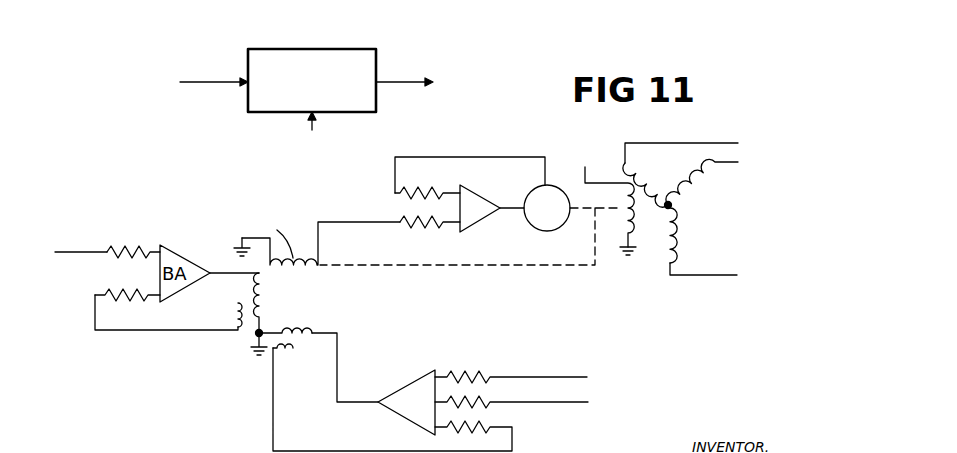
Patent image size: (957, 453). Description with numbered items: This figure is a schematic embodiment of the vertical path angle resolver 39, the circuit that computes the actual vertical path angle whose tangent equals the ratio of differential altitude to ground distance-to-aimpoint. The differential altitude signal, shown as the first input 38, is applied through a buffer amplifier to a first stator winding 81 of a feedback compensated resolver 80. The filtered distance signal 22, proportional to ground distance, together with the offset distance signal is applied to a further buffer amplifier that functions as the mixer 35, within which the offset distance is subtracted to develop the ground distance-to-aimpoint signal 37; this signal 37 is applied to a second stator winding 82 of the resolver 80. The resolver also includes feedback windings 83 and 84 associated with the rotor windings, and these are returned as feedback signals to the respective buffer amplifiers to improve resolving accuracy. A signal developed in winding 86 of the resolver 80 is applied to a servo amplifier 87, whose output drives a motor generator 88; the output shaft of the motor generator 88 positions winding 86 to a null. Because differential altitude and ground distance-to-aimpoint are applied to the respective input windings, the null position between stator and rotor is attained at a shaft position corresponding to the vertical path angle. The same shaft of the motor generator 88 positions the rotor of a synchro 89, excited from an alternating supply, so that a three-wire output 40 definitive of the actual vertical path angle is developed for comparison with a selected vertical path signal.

The vertical path angle resolver 39 is at (347, 49).
The first input 38 is at (205, 82).
The three-wire output 40 is at (394, 83).
The second input 37 is at (313, 127).
The servo amplifier 87 is at (478, 190).
The motor generator 88 is at (545, 232).
The synchro 89 is at (662, 268).
The winding 86 is at (293, 270).
The first stator winding 81 is at (252, 288).
The feedback winding 83 is at (233, 308).
The feedback compensated resolver 80 is at (350, 302).
The second stator winding 82 is at (314, 324).
The feedback winding 84 is at (290, 353).
The mixer 35 is at (407, 422).
The filtered distance signal 22 is at (540, 376).